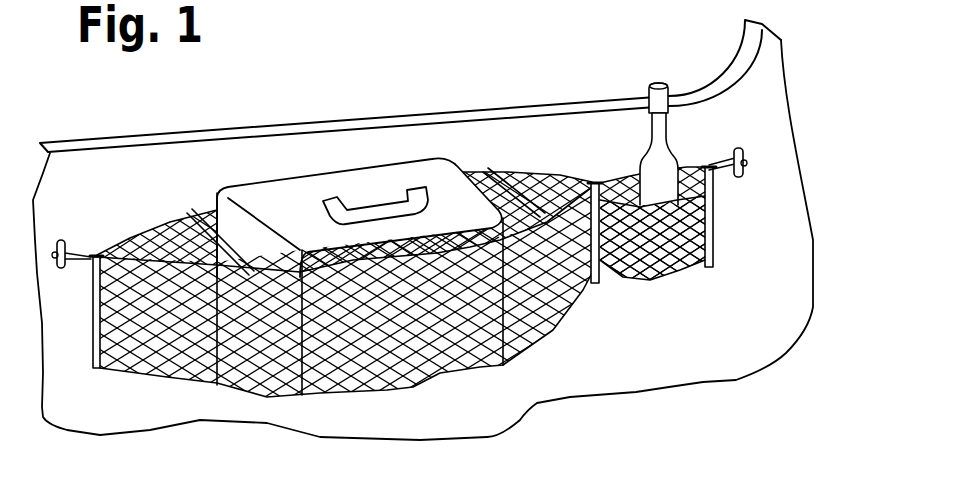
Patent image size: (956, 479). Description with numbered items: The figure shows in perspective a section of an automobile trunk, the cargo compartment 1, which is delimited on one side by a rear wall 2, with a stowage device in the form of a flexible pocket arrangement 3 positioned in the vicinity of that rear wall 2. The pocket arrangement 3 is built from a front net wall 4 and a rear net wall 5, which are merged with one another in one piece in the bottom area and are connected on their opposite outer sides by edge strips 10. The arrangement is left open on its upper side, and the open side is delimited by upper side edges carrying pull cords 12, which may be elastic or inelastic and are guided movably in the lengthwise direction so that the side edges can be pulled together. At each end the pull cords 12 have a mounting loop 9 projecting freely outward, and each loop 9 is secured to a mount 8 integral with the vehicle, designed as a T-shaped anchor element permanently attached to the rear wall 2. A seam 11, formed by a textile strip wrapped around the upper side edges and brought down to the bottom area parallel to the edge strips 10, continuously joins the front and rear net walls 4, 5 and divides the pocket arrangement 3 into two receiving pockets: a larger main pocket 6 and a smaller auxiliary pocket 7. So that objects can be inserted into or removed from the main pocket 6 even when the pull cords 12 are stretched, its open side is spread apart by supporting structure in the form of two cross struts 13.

The cargo compartment 1 is at (696, 363).
The rear wall 2 is at (331, 122).
The pocket arrangement 3 is at (356, 261).
The front net wall 4 is at (192, 350).
The rear net wall 5 is at (158, 232).
The main pocket 6 is at (527, 198).
The auxiliary pocket 7 is at (620, 161).
The mount 8 is at (57, 255).
The mounting loop 9 is at (80, 262).
The edge strip 10 is at (93, 360).
The seam 11 is at (597, 283).
The pull cord 12 is at (507, 175).
The cross strut 13 is at (195, 217).